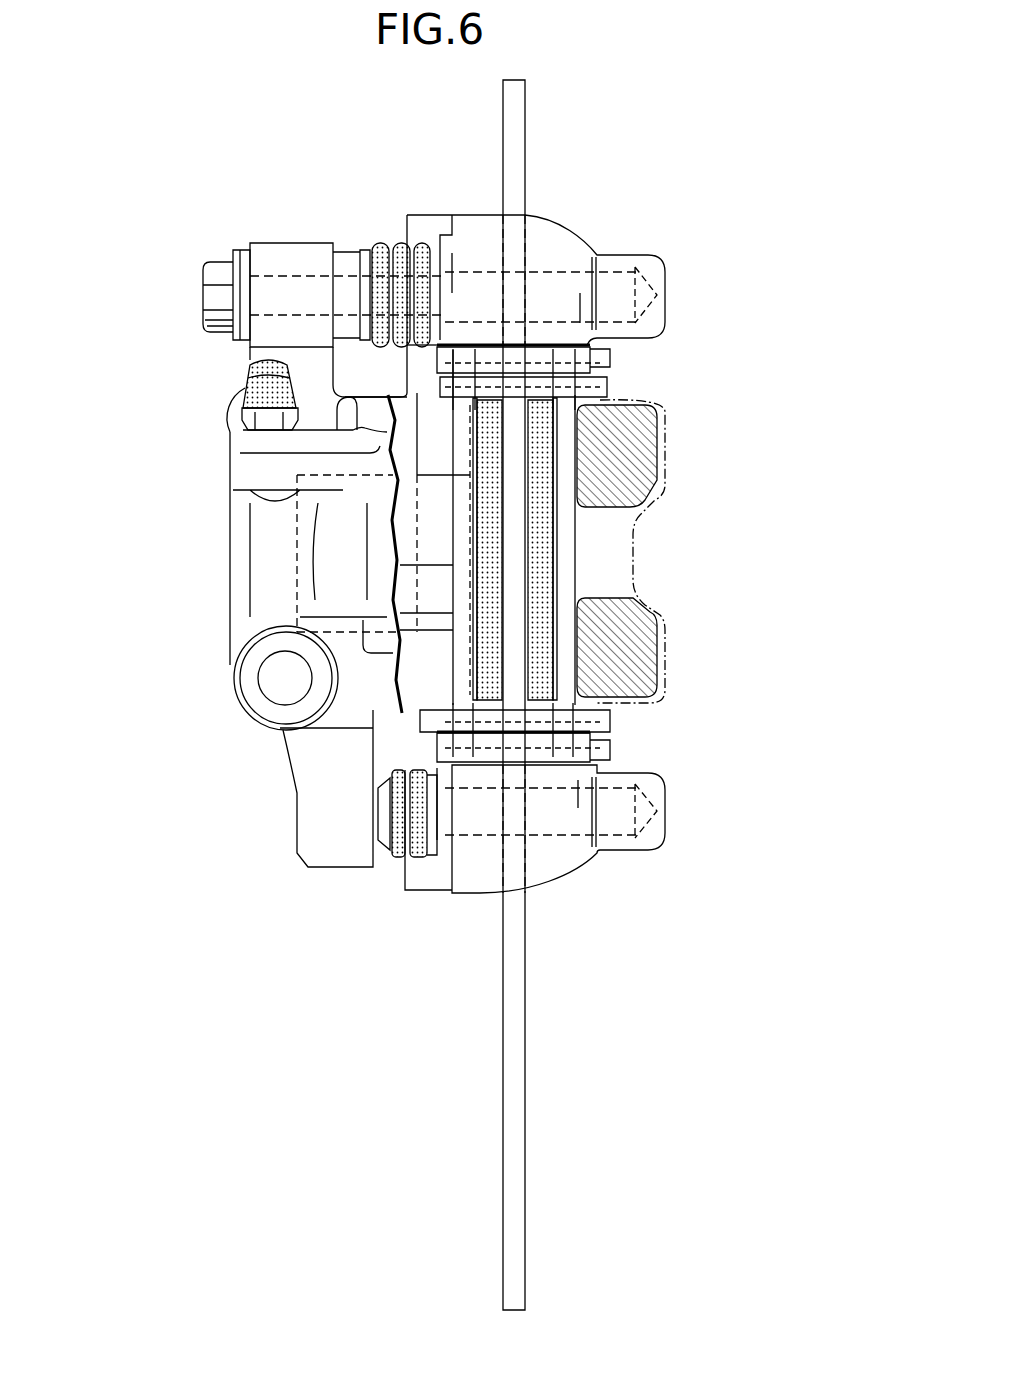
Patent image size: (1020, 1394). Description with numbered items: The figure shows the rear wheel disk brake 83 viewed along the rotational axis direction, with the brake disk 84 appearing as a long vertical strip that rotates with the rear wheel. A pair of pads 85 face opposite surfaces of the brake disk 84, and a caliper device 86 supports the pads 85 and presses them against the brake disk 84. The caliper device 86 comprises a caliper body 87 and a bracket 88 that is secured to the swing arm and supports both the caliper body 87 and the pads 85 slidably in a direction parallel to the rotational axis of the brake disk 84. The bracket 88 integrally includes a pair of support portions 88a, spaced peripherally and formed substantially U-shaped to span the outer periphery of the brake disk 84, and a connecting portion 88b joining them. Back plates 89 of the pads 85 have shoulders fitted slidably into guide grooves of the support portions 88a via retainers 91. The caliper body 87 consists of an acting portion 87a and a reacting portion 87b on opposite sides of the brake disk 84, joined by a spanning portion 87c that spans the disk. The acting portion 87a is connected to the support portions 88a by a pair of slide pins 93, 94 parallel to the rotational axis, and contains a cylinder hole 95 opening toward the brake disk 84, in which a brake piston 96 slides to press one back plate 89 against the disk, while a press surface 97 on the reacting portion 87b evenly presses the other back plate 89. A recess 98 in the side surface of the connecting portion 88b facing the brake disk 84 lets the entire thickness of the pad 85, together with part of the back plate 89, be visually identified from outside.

The rear wheel disk brake 83 is at (500, 1088).
The brake disk 84 is at (515, 1100).
The pads 85 is at (560, 460).
The caliper device 86 is at (338, 868).
The caliper body 87 is at (229, 660).
The acting portion 87a is at (232, 575).
The reacting portion 87b is at (633, 560).
The spanning portion 87c is at (512, 352).
The bracket 88 is at (598, 855).
The support portions 88a is at (471, 220).
The connecting portion 88b is at (393, 430).
The back plates 89 is at (570, 560).
The retainers 91 is at (597, 385).
The slide pin 93 is at (513, 353).
The slide pin 94 is at (543, 837).
The cylinder hole 95 is at (480, 487).
The brake piston 96 is at (405, 597).
The press surface 97 is at (572, 645).
The recess 98 is at (373, 519).